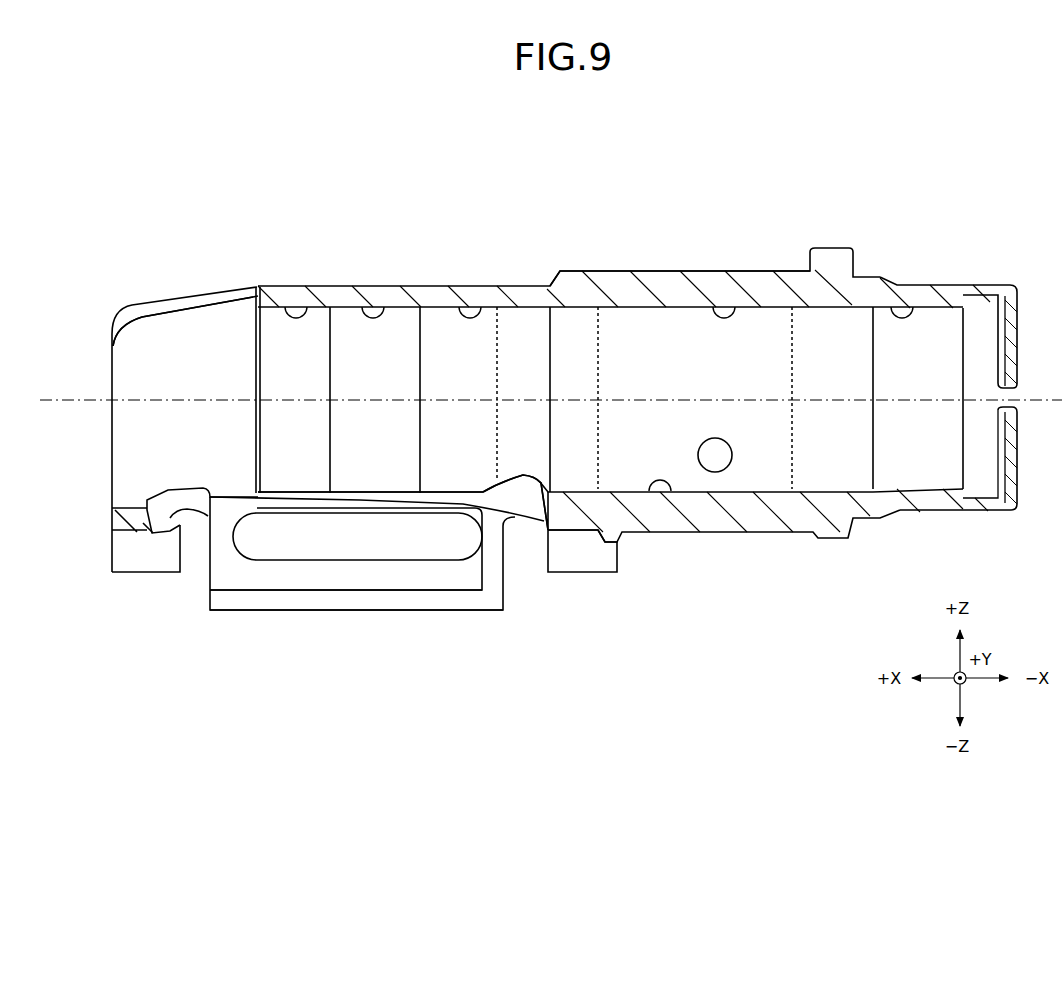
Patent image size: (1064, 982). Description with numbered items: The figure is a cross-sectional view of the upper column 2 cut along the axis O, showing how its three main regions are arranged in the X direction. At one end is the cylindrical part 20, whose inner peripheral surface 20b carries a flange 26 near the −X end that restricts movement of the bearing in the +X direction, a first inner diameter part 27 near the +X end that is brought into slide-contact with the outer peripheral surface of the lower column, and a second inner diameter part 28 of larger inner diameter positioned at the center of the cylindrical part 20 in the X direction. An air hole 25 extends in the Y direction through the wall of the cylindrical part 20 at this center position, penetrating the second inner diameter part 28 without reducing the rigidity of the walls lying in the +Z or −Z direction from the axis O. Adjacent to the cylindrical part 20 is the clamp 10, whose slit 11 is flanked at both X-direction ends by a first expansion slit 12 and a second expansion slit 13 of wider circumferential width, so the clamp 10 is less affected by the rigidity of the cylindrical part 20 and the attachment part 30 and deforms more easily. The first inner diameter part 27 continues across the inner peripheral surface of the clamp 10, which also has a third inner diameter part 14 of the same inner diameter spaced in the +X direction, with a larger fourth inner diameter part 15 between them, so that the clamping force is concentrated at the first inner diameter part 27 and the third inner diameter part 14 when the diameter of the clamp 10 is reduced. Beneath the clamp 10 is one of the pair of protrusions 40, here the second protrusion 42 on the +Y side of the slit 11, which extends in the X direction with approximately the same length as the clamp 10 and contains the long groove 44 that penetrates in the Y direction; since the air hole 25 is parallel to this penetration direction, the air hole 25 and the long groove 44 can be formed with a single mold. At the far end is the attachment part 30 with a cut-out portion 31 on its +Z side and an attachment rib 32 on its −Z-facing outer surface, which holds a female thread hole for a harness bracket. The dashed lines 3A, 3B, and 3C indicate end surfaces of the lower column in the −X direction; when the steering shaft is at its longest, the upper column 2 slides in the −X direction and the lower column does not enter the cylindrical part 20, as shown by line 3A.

The upper column 2 is at (893, 150).
The axis O is at (86, 396).
The clamp 10 is at (368, 257).
The slit 11 is at (363, 503).
The first expansion slit 12 is at (523, 501).
The second expansion slit 13 is at (190, 501).
The third inner diameter part 14 is at (301, 318).
The fourth inner diameter part 15 is at (376, 318).
The cylindrical part 20 is at (766, 257).
The inner peripheral surface 20b is at (663, 491).
The air hole 25 is at (712, 462).
The flange 26 is at (901, 317).
The first inner diameter part 27 is at (463, 318).
The second inner diameter part 28 is at (716, 318).
The attachment part 30 is at (193, 257).
The cut-out portion 31 is at (160, 303).
The attachment rib 32 is at (127, 573).
The protrusion 40 is at (276, 583).
The second protrusion 42 is at (356, 627).
The long groove 44 is at (409, 551).
The end surface of the lower column 3A is at (510, 335).
The end surface of the lower column 3B is at (604, 337).
The end surface of the lower column 3C is at (796, 337).